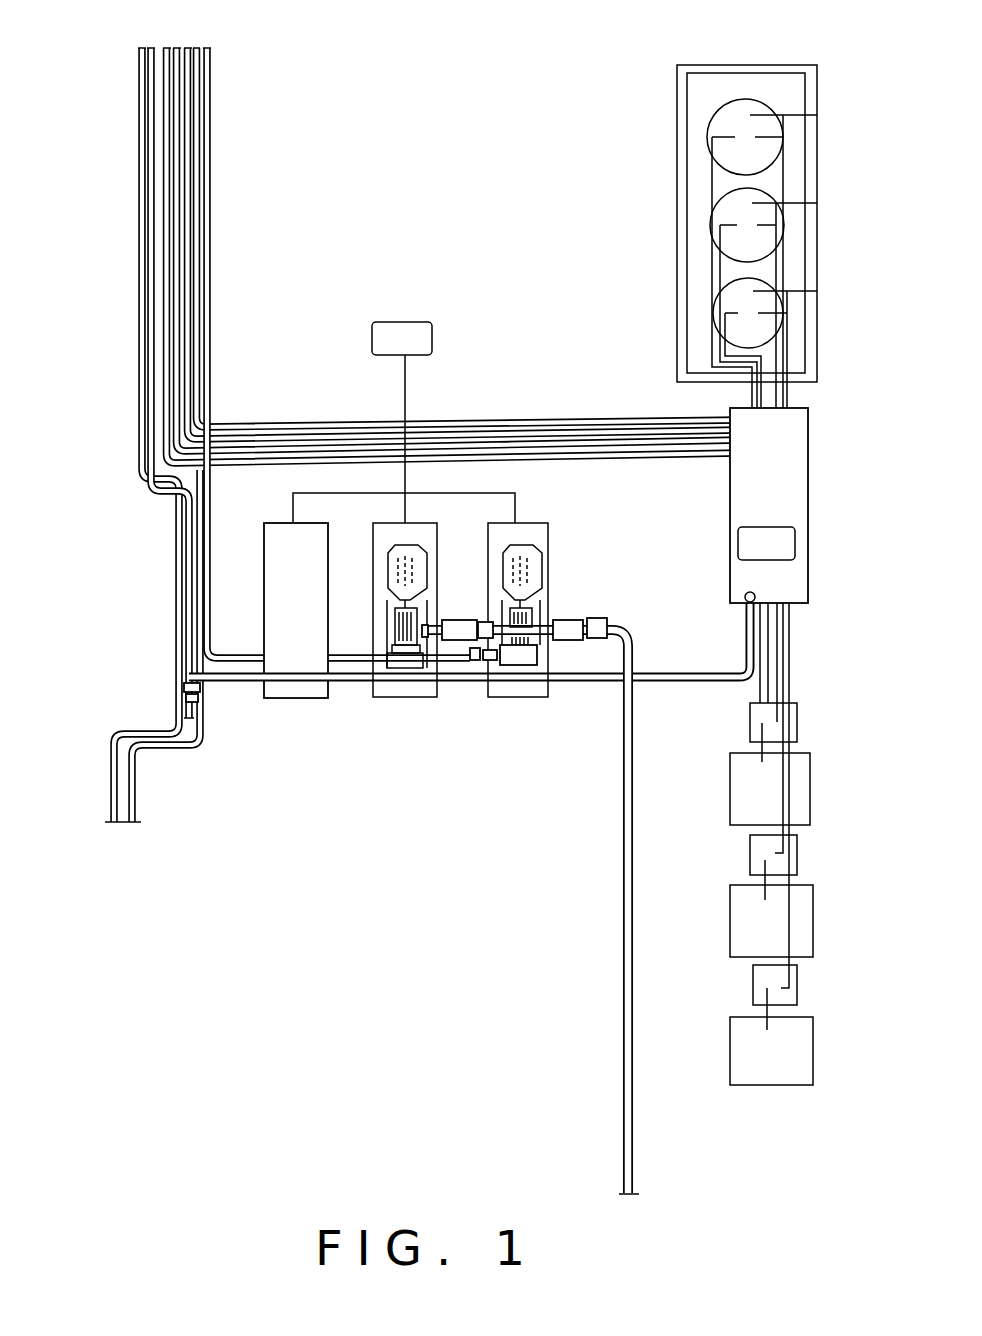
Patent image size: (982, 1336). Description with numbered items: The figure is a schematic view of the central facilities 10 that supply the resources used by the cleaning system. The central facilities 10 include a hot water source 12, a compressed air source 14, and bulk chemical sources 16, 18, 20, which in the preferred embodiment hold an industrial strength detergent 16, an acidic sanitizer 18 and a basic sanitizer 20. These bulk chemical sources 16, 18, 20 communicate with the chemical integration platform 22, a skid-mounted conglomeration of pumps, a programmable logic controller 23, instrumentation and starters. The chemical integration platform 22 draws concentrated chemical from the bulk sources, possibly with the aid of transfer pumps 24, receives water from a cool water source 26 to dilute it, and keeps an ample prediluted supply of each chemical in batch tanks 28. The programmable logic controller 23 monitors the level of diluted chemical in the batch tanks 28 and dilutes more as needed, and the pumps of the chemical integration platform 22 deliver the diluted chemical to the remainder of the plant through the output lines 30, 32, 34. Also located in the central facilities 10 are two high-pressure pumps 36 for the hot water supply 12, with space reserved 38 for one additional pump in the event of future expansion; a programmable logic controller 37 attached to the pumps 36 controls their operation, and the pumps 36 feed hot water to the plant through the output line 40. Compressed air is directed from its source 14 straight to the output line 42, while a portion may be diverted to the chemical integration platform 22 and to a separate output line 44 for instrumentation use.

The central facilities 10 is at (115, 329).
The hot water source 12 is at (621, 1190).
The compressed air source 14 is at (109, 828).
The bulk chemical source 16 is at (810, 790).
The bulk chemical source 18 is at (813, 925).
The bulk chemical source 20 is at (813, 1067).
The chemical integration platform 22 is at (808, 477).
The programmable logic controller 23 is at (795, 545).
The transfer pumps 24 is at (753, 992).
The cool water source 26 is at (143, 828).
The batch tanks 28 is at (770, 190).
The output line 30 is at (165, 47).
The output line 32 is at (177, 45).
The output line 34 is at (189, 45).
The high-pressure pumps 36 is at (430, 698).
The programmable logic controller 37 is at (402, 322).
The space reserved 38 is at (293, 698).
The output line 40 is at (199, 44).
The output line 42 is at (147, 47).
The output line 44 is at (139, 46).